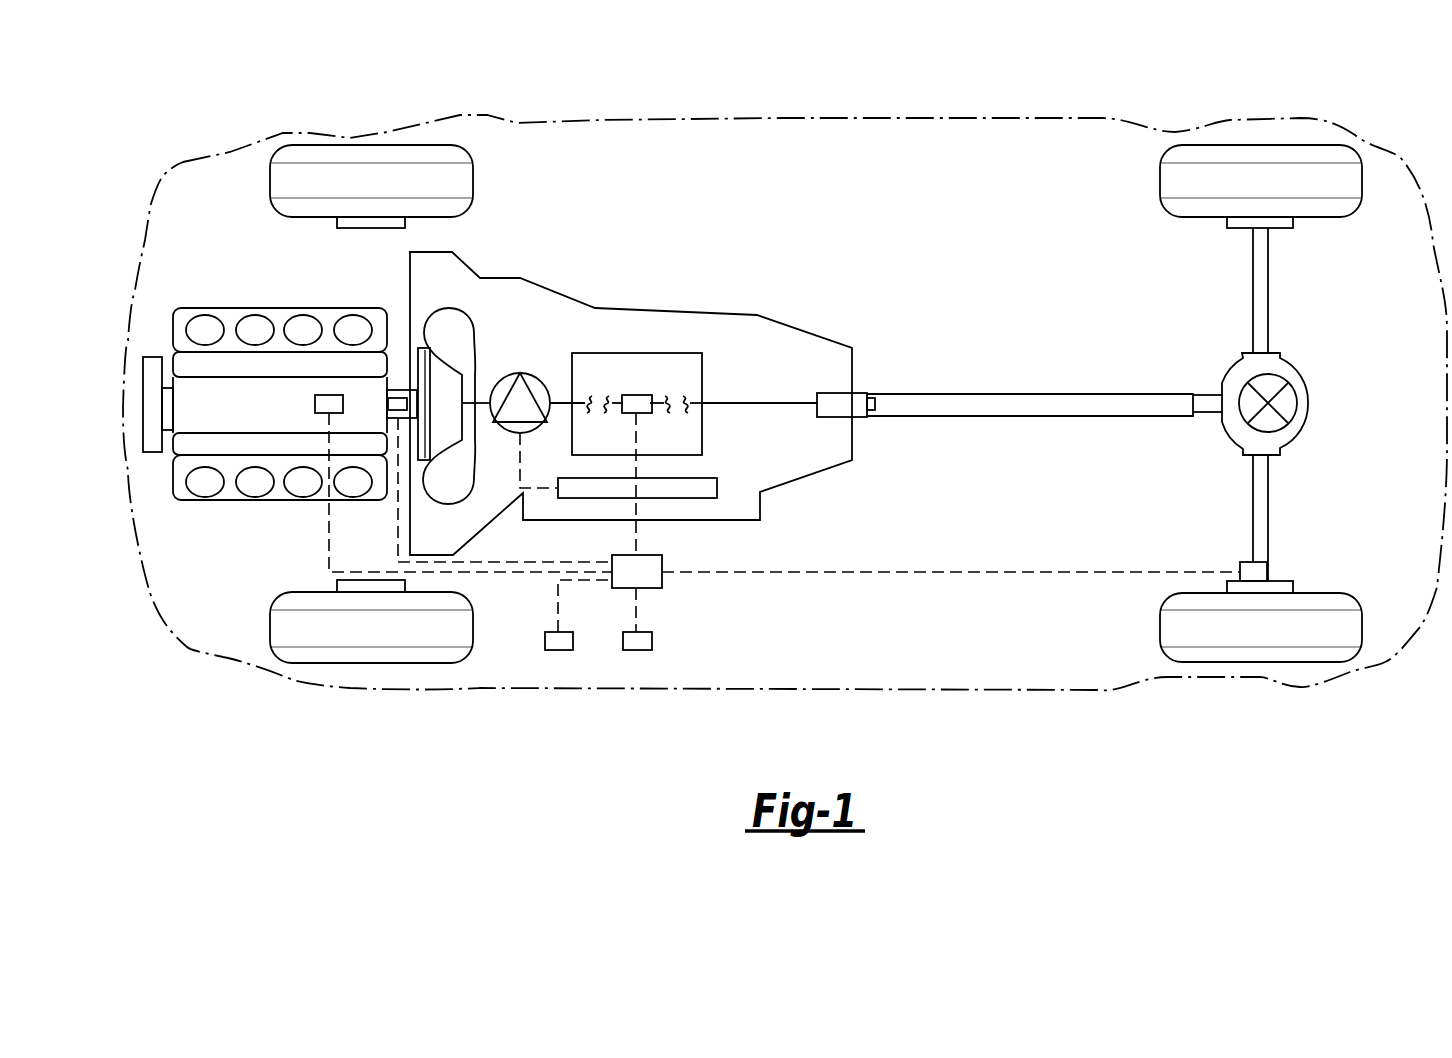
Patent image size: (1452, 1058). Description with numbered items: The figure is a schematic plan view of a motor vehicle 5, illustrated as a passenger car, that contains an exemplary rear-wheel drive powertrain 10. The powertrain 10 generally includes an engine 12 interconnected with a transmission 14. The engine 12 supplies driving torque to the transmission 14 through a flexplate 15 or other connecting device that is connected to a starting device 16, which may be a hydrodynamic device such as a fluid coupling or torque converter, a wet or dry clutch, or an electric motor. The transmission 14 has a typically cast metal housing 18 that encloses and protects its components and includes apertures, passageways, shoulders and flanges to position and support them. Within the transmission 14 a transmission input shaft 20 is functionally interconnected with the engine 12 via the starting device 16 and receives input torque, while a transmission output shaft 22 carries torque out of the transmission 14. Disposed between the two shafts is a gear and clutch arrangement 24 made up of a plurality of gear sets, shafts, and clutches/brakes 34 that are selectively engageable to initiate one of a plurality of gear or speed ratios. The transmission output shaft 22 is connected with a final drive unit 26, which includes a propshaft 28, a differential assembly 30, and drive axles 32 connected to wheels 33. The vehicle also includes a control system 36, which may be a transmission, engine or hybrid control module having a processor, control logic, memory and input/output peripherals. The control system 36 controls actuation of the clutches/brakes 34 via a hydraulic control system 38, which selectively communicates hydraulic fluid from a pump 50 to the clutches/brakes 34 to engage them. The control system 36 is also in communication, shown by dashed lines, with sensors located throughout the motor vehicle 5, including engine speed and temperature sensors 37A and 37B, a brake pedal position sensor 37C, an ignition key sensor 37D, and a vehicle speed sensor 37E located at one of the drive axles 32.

The motor vehicle 5 is at (898, 117).
The powertrain 10 is at (845, 225).
The engine 12 is at (220, 419).
The transmission 14 is at (662, 305).
The flexplate 15 is at (415, 350).
The starting device 16 is at (468, 316).
The housing 18 is at (817, 331).
The transmission input shaft 20 is at (477, 392).
The transmission output shaft 22 is at (753, 403).
The gear and clutch arrangement 24 is at (607, 352).
The final drive unit 26 is at (1145, 350).
The propshaft 28 is at (1000, 393).
The differential assembly 30 is at (1297, 372).
The drive axles 32 is at (1262, 300).
The wheels 33 is at (1317, 218).
The clutches/brakes 34 is at (640, 395).
The control system 36 is at (662, 582).
The engine speed and temperature sensor 37A is at (315, 403).
The engine speed and temperature sensor 37B is at (396, 390).
The brake pedal position sensor 37C is at (560, 650).
The ignition key sensor 37D is at (637, 650).
The vehicle speed sensor 37E is at (1245, 562).
The hydraulic control system 38 is at (693, 500).
The pump 50 is at (498, 432).